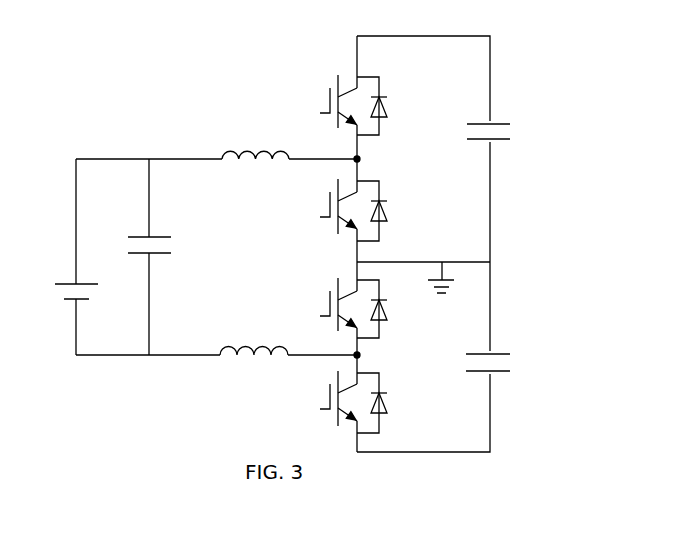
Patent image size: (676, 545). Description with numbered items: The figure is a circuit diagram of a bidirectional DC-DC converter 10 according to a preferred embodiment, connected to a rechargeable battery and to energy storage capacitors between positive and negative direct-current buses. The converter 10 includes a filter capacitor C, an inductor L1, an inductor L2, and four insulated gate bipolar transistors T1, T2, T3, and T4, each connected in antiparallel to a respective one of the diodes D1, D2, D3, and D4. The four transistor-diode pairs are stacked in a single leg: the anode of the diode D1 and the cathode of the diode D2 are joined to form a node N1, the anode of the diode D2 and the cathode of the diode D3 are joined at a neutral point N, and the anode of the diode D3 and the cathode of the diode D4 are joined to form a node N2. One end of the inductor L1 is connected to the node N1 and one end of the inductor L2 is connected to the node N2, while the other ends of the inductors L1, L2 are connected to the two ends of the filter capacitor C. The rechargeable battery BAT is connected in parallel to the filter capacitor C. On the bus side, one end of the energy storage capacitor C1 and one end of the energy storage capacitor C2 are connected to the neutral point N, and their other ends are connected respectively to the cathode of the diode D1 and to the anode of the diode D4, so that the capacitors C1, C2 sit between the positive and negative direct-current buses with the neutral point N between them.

The bidirectional DC-DC converter 10 is at (235, 86).
The rechargeable battery BAT is at (50, 289).
The filter capacitor C is at (162, 257).
The inductor L1 is at (255, 141).
The inductor L2 is at (254, 334).
The node N1 is at (372, 160).
The node N2 is at (372, 356).
The neutral point N is at (441, 292).
The insulated gate bipolar transistor T1 is at (329, 101).
The insulated gate bipolar transistor T2 is at (329, 206).
The insulated gate bipolar transistor T3 is at (329, 304).
The insulated gate bipolar transistor T4 is at (329, 398).
The diode D1 is at (388, 106).
The diode D2 is at (388, 211).
The diode D3 is at (388, 309).
The diode D4 is at (388, 403).
The energy storage capacitor C1 is at (505, 130).
The energy storage capacitor C2 is at (505, 361).